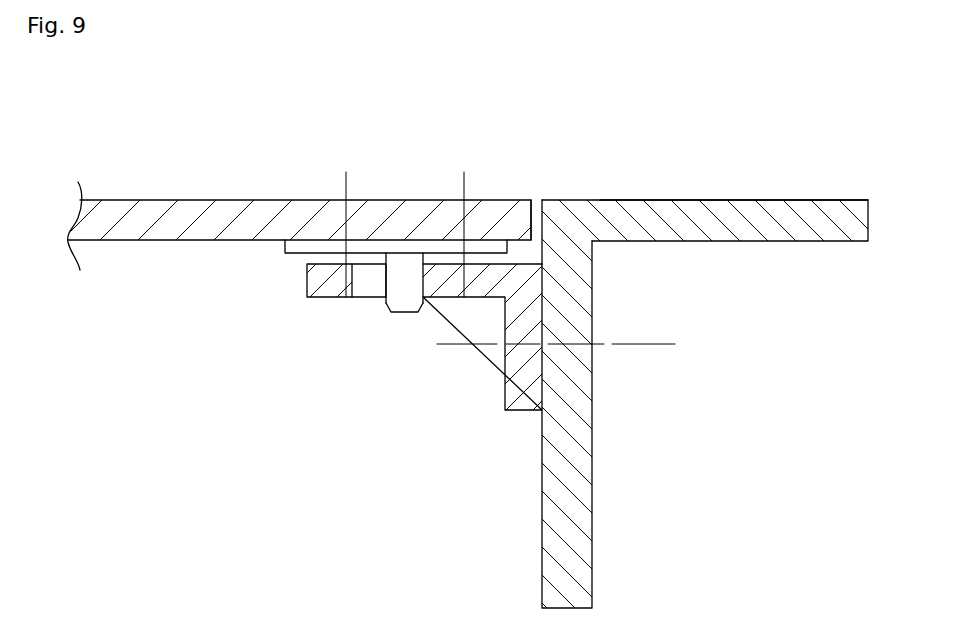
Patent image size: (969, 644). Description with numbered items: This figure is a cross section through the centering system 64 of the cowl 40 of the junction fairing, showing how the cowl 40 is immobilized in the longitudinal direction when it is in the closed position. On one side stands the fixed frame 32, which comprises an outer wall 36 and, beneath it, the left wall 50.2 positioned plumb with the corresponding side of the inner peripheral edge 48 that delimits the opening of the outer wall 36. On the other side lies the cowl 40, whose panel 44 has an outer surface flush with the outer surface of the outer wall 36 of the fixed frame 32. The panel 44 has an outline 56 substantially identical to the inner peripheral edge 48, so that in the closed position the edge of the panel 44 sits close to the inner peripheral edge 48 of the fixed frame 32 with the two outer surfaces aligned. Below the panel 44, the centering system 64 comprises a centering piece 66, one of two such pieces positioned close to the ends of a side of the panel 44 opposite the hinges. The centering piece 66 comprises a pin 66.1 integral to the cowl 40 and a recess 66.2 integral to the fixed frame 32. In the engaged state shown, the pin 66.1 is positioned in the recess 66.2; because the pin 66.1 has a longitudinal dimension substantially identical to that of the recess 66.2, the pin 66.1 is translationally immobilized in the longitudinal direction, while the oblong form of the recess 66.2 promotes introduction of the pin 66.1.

The fixed frame 32 is at (678, 189).
The outer wall 36 is at (740, 200).
The cowl 40 is at (128, 208).
The panel 44 is at (236, 222).
The inner peripheral edge 48 is at (551, 190).
The left wall 50.2 is at (541, 538).
The outline 56 is at (525, 193).
The centering system 64 is at (400, 174).
The centering piece 66 is at (286, 305).
The pin 66.1 is at (403, 275).
The recess 66.2 is at (352, 290).